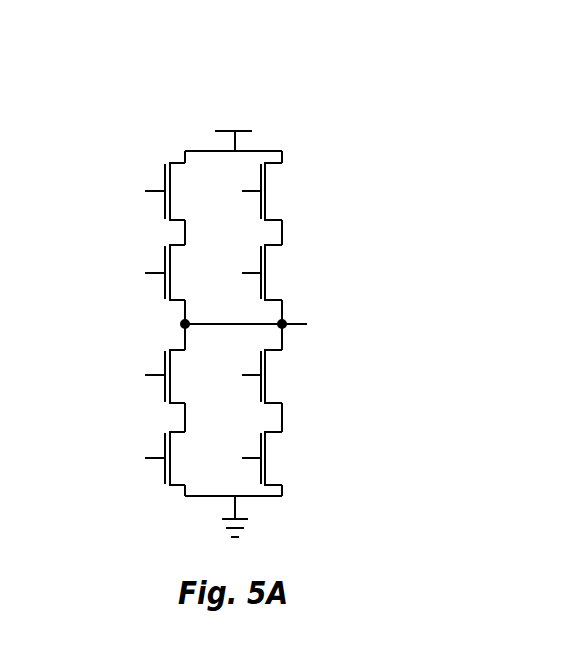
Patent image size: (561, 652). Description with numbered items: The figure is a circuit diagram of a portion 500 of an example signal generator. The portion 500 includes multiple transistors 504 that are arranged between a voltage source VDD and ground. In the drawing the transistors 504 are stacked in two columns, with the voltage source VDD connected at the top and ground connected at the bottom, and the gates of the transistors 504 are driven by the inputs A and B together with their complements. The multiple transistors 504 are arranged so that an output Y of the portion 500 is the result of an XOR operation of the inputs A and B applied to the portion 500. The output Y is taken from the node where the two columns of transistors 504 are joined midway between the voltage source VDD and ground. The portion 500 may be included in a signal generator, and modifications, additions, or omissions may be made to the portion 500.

The portion of signal generator 500 is at (402, 70).
The transistors 504 is at (160, 329).
The voltage source VDD is at (233, 124).
The output Y is at (253, 325).